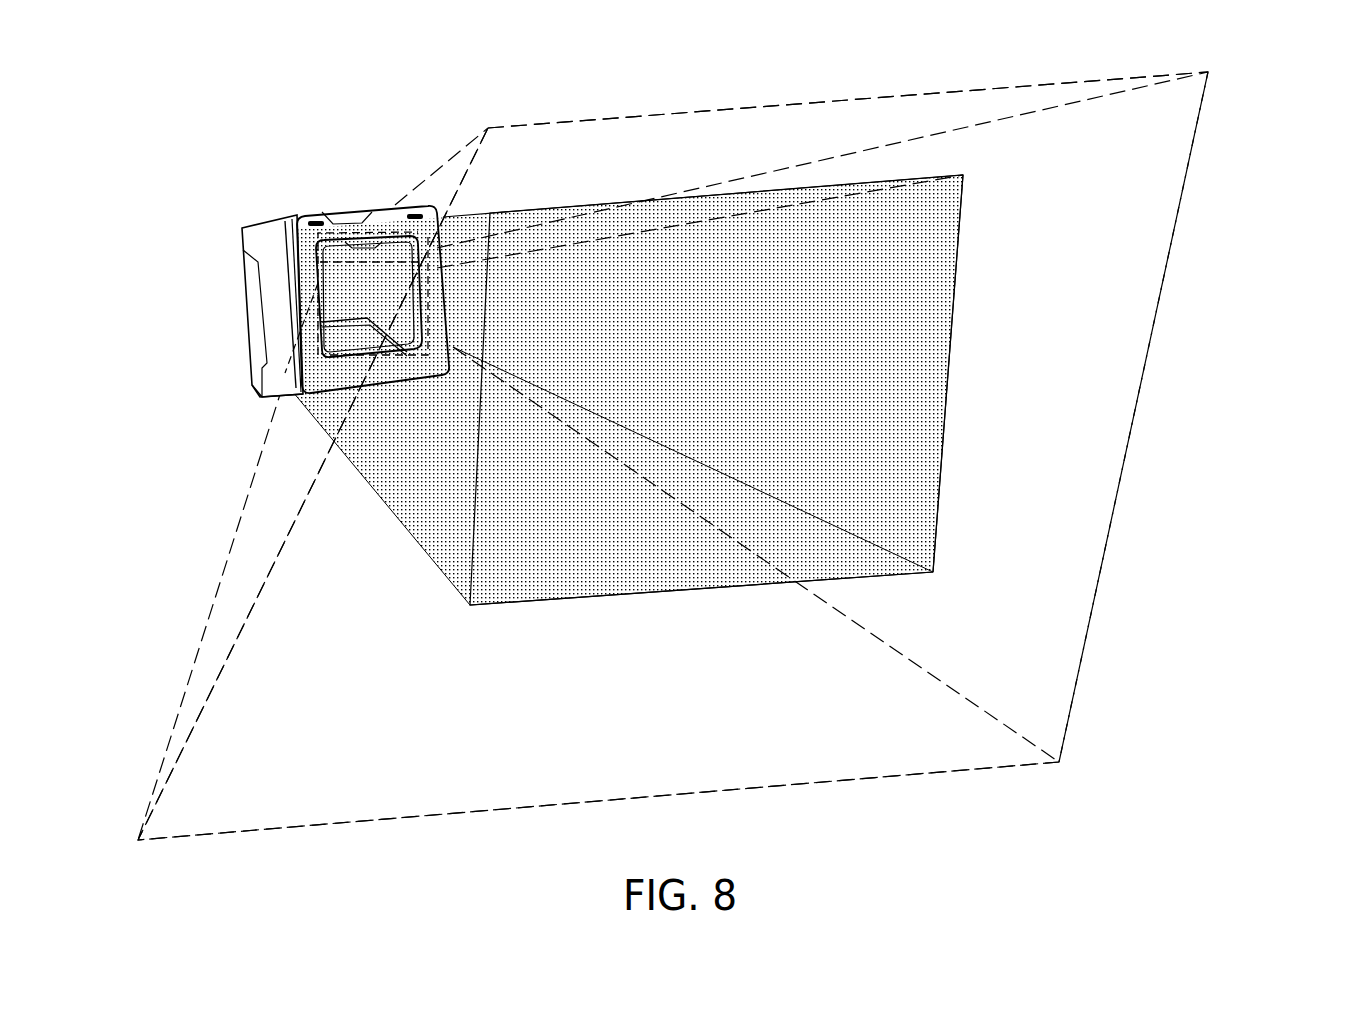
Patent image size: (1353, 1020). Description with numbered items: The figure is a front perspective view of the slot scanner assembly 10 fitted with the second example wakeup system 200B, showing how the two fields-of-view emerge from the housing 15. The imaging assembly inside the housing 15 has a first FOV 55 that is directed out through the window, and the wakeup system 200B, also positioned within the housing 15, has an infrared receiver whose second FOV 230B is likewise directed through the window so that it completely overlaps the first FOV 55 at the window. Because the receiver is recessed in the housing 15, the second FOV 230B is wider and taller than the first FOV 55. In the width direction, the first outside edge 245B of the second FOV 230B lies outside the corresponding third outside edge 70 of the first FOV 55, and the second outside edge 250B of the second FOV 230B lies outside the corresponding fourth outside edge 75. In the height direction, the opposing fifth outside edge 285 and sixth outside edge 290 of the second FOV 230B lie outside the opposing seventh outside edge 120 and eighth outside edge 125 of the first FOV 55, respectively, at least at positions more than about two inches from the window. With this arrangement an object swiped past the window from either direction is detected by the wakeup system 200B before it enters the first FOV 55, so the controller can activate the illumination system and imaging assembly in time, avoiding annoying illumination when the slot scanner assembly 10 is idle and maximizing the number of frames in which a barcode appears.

The slot scanner assembly 10 is at (278, 277).
The second example wakeup system 200B is at (278, 277).
The housing 15 is at (250, 197).
The seventh outside edge 120 is at (754, 193).
The first FOV 55 is at (930, 198).
The fifth outside edge 285 is at (995, 88).
The second FOV 230B is at (1125, 107).
The fourth outside edge 75 is at (955, 330).
The third outside edge 70 is at (473, 536).
The first outside edge 245B is at (258, 593).
The second outside edge 250B is at (1097, 579).
The eighth outside edge 125 is at (650, 592).
The sixth outside edge 290 is at (990, 767).